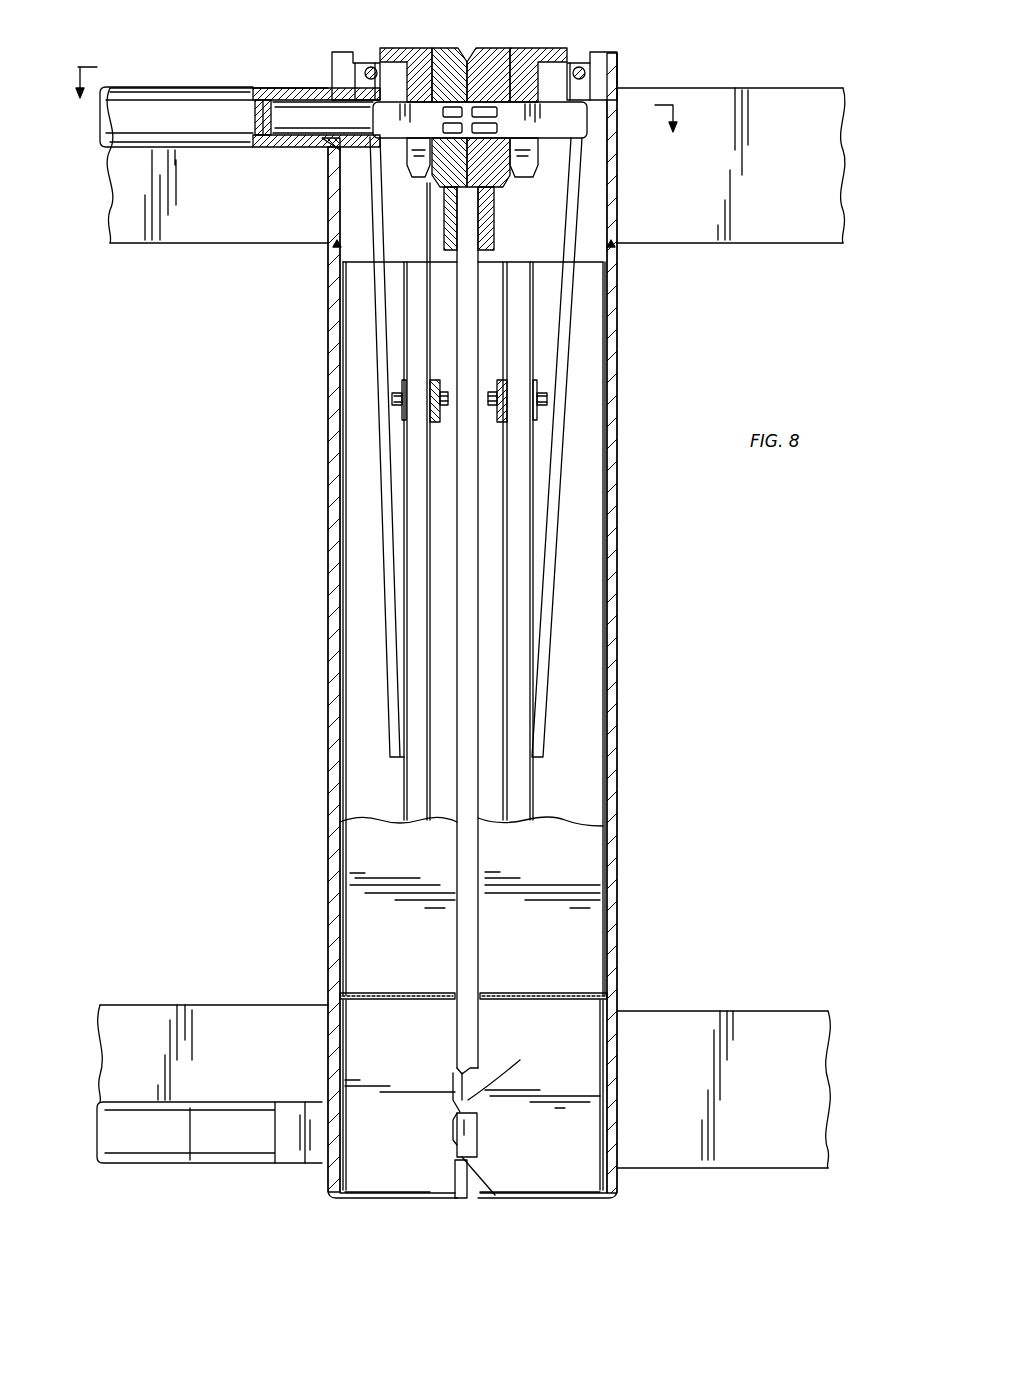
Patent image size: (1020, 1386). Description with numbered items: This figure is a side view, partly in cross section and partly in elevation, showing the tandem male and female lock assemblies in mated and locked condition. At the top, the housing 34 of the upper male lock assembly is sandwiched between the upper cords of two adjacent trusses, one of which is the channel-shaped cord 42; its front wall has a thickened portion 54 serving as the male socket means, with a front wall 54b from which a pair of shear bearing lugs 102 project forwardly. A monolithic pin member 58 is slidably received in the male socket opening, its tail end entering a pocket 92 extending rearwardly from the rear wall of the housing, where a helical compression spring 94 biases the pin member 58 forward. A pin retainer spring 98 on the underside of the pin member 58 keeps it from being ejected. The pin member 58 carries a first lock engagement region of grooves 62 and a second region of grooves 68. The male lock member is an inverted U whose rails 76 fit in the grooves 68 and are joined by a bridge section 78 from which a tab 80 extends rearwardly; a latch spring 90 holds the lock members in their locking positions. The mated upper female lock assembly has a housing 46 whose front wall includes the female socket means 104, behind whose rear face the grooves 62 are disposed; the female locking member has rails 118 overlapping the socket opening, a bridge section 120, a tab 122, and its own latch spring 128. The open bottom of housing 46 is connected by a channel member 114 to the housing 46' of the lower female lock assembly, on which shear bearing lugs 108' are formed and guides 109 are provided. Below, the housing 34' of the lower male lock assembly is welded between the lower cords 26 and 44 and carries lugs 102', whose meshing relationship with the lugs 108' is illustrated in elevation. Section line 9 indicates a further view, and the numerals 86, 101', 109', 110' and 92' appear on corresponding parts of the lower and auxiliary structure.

The pocket 92 is at (176, 92).
The helical compression spring 94 is at (262, 100).
The pin member 58 is at (300, 108).
The tab 80 is at (360, 55).
The bridge section 78 is at (410, 75).
The thickened portion 54 is at (445, 62).
The guides 109 is at (422, 166).
The front wall 54b is at (490, 62).
The shear bearing lugs 102 is at (551, 53).
The tab 122 is at (585, 52).
The bridge section 120 is at (590, 75).
The section line 9 is at (374, 112).
The vertical grooves 68 is at (325, 142).
The spring 98 is at (418, 150).
The rails 76 is at (428, 195).
The housing 34 is at (339, 672).
The channel-shaped cord 42 is at (130, 245).
The grooves 62 is at (527, 157).
The rails 118 is at (565, 168).
The female socket means 104 is at (507, 185).
The housing 46 is at (579, 625).
The latch spring 128 is at (575, 330).
The latch spring 90 is at (378, 333).
The fluid 86 is at (345, 865).
The channel member 114 is at (598, 858).
The lower cord 26 is at (162, 1010).
The housing 34' is at (303, 1077).
The shear bearing lugs 108' is at (414, 1089).
The housing 46' is at (631, 1068).
The lower cord 44 is at (780, 1020).
The guide line 101' is at (509, 1136).
The link 109' is at (427, 1106).
The link 110' is at (415, 1144).
The shear bearing lugs 102' is at (499, 1138).
The pipe 92' is at (209, 1153).